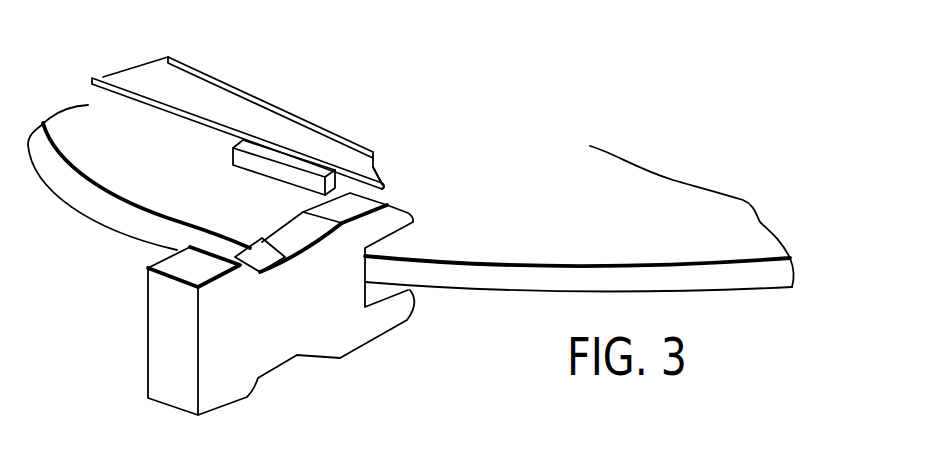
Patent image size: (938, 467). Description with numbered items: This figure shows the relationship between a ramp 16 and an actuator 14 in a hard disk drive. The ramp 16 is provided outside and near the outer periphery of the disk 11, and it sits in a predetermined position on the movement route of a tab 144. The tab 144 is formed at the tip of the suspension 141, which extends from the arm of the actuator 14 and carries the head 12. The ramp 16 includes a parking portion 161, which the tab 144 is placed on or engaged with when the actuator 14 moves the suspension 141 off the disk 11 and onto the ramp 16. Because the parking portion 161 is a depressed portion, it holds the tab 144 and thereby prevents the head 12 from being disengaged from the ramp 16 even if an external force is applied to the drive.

The disk 11 is at (695, 198).
The head 12 is at (232, 157).
The actuator 14 is at (113, 60).
The suspension 141 is at (200, 92).
The tab 144 is at (385, 188).
The ramp 16 is at (157, 362).
The parking portion 161 is at (252, 262).